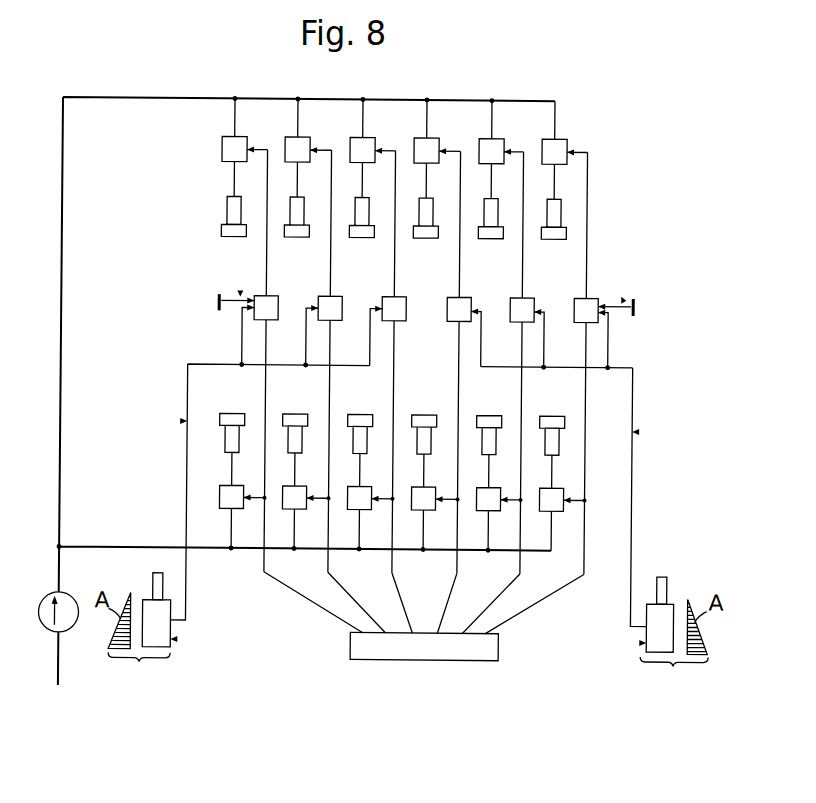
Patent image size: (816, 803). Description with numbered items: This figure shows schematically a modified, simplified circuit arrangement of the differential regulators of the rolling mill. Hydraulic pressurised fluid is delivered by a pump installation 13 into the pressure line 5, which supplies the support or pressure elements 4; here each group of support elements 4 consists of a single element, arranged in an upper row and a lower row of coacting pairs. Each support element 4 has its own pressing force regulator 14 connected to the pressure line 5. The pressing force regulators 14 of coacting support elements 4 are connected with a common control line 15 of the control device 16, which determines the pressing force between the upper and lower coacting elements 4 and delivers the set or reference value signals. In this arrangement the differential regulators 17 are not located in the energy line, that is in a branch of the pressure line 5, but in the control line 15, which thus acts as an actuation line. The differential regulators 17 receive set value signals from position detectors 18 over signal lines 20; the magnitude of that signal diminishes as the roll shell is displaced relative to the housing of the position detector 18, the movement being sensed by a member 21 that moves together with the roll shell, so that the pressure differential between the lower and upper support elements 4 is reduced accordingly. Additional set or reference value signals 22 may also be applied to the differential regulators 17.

The support or pressure element 4 is at (229, 211).
The pressure line 5 is at (457, 99).
The pump installation 13 is at (64, 598).
The pressing force regulator 14 is at (221, 151).
The control line 15 is at (323, 612).
The control device 16 is at (490, 648).
The differential regulator 17 is at (271, 306).
The position detector 18 is at (180, 640).
The signal line 20 is at (181, 422).
The member 21 is at (156, 592).
The additional set value signal 22 is at (240, 296).